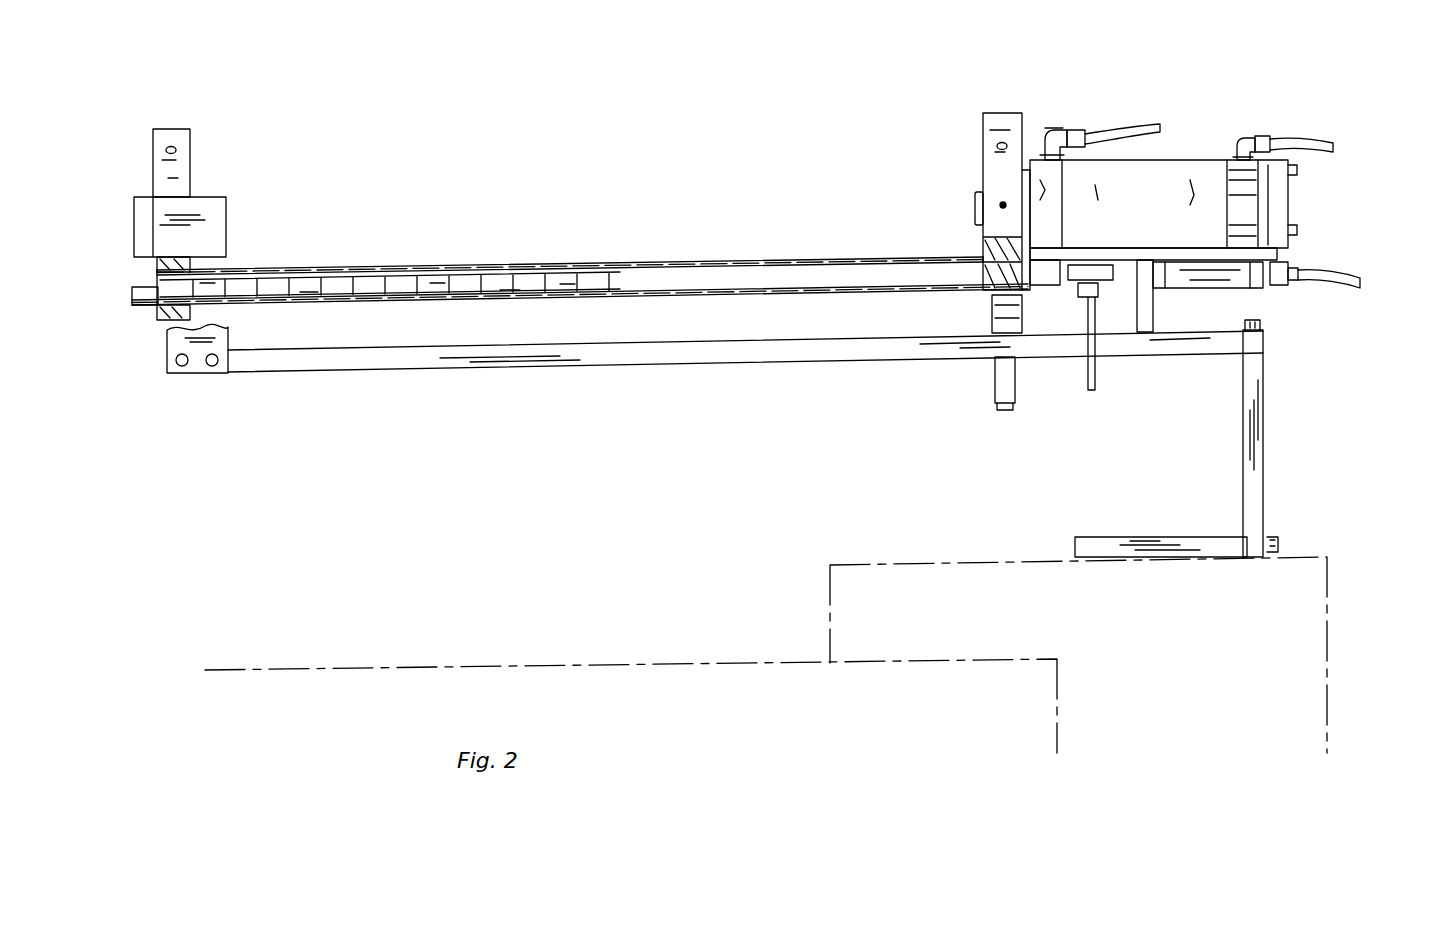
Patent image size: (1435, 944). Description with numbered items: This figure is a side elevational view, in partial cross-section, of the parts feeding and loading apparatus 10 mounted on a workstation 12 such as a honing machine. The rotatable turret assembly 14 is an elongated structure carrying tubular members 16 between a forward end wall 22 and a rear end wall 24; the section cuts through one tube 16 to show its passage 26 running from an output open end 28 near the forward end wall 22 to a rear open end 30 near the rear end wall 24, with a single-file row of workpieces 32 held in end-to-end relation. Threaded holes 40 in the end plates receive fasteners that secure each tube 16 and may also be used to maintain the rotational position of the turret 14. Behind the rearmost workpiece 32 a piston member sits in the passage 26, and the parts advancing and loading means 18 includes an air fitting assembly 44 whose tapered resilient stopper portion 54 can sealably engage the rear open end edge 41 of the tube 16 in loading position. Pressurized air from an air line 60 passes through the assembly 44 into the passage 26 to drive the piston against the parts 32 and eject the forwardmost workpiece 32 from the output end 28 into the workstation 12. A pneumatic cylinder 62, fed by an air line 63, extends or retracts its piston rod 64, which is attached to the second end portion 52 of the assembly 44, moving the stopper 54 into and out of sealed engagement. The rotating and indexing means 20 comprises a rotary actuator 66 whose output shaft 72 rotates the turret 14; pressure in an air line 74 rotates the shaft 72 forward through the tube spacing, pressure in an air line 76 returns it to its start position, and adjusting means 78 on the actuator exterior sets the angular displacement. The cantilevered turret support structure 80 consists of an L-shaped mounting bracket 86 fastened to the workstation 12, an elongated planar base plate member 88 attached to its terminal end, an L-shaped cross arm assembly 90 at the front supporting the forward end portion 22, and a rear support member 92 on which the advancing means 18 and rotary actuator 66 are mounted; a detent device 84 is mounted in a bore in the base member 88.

The parts feeding and loading apparatus 10 is at (1342, 357).
The workstation 12 is at (1332, 577).
The rotatable turret assembly 14 is at (755, 298).
The tubular member 16 is at (668, 298).
The parts advancing and loading means 18 is at (1213, 291).
The rotating and indexing means 20 is at (1290, 187).
The forward end wall 22 is at (185, 175).
The rear end wall 24 is at (990, 112).
The passage 26 is at (740, 264).
The output open end 28 is at (150, 285).
The rear open end 30 is at (1047, 287).
The workpiece 32 is at (478, 282).
The threaded hole 40 is at (178, 146).
The rear open end edge 41 is at (1025, 268).
The air fitting assembly 44 is at (1103, 285).
The second end portion 52 is at (1093, 266).
The stopper portion 54 is at (1062, 287).
The air line 60 is at (1096, 370).
The pneumatic cylinder 62 is at (1255, 290).
The air line 63 is at (1360, 290).
The piston rod 64 is at (1120, 262).
The rotary actuator 66 is at (1168, 160).
The shaft 72 is at (975, 209).
The air line 74 is at (1108, 128).
The air line 76 is at (1306, 142).
The adjusting means 78 is at (1243, 138).
The turret support structure 80 is at (266, 371).
The detent device 84 is at (995, 378).
The L-shaped mounting bracket 86 is at (1153, 558).
The base plate member 88 is at (498, 366).
The cross arm assembly 90 is at (167, 349).
The rear support member 92 is at (1284, 260).